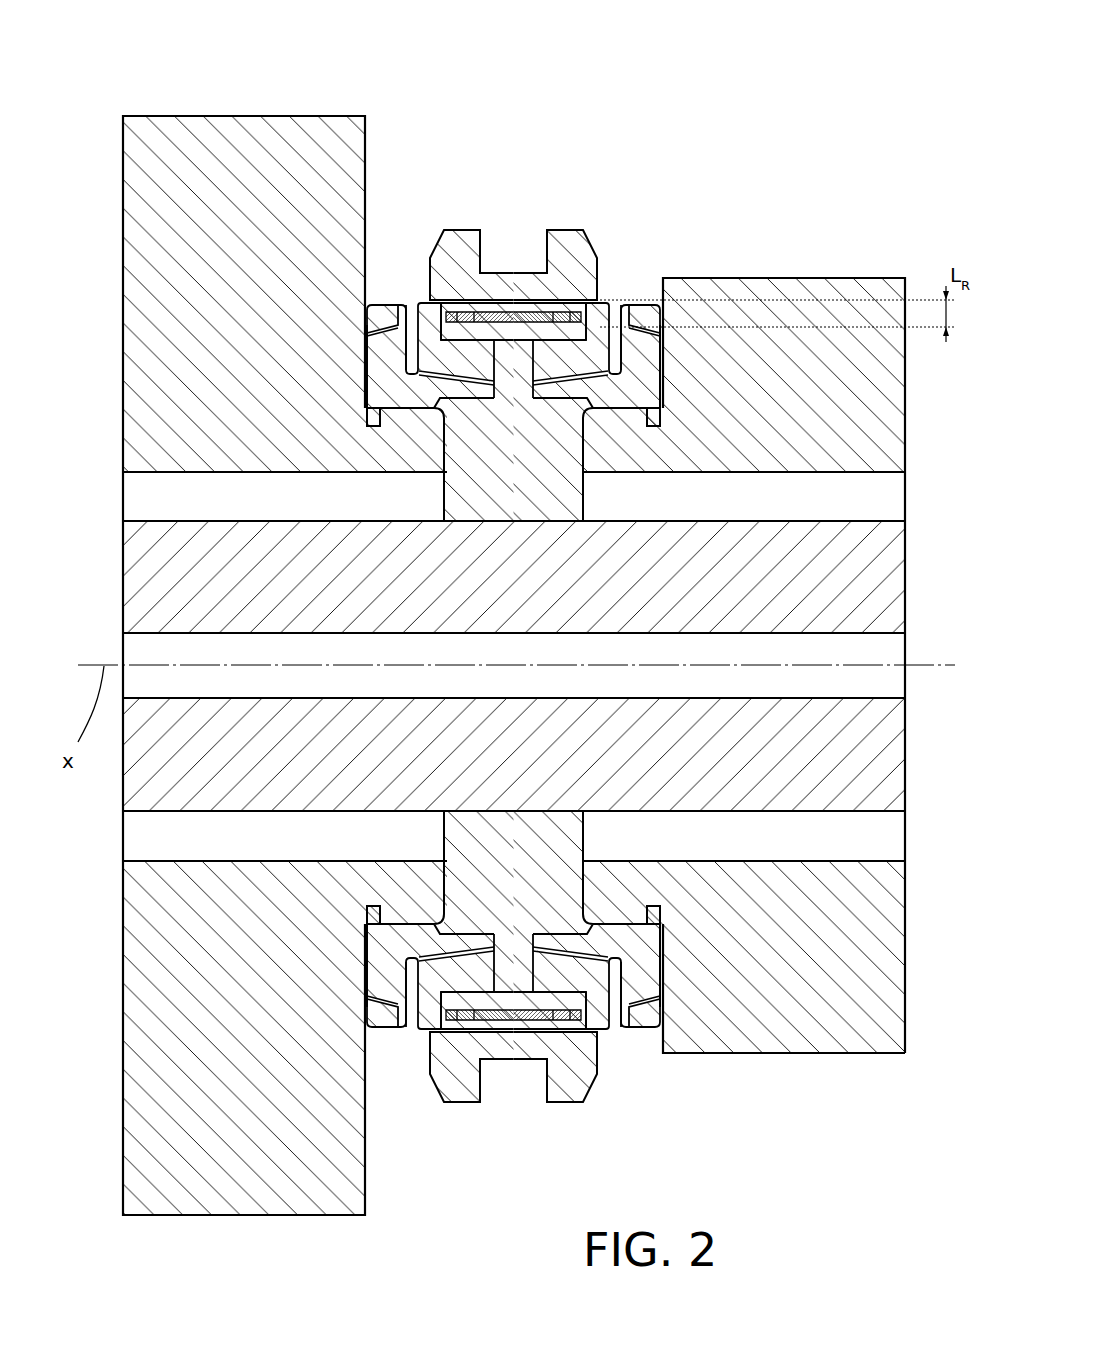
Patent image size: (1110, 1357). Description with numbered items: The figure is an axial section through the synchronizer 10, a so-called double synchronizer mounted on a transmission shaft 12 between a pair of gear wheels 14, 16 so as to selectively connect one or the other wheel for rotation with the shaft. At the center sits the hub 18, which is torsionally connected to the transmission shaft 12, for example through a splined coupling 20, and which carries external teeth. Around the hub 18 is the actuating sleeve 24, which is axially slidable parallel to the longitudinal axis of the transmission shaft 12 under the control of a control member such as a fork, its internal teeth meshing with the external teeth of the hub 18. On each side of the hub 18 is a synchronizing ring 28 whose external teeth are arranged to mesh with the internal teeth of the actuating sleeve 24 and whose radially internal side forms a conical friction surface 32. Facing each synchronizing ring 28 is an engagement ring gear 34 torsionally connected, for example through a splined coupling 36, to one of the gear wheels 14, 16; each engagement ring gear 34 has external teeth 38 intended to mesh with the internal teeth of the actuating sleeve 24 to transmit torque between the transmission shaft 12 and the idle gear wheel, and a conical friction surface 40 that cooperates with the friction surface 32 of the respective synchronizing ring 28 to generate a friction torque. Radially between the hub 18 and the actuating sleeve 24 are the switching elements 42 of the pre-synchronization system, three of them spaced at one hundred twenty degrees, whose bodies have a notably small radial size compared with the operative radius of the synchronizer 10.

The synchronizer 10 is at (615, 211).
The transmission shaft 12 is at (790, 815).
The gear wheel 14 is at (200, 115).
The gear wheel 16 is at (813, 277).
The hub 18 is at (582, 481).
The splined coupling 20 is at (443, 488).
The actuating sleeve 24 is at (427, 302).
The synchronizing ring 28 is at (420, 302).
The friction surface 32 is at (425, 383).
The engagement ring gear 34 is at (387, 350).
The splined coupling 36 is at (658, 430).
The external teeth 38 is at (384, 304).
The friction surface 40 is at (461, 370).
The switching element 42 is at (517, 300).